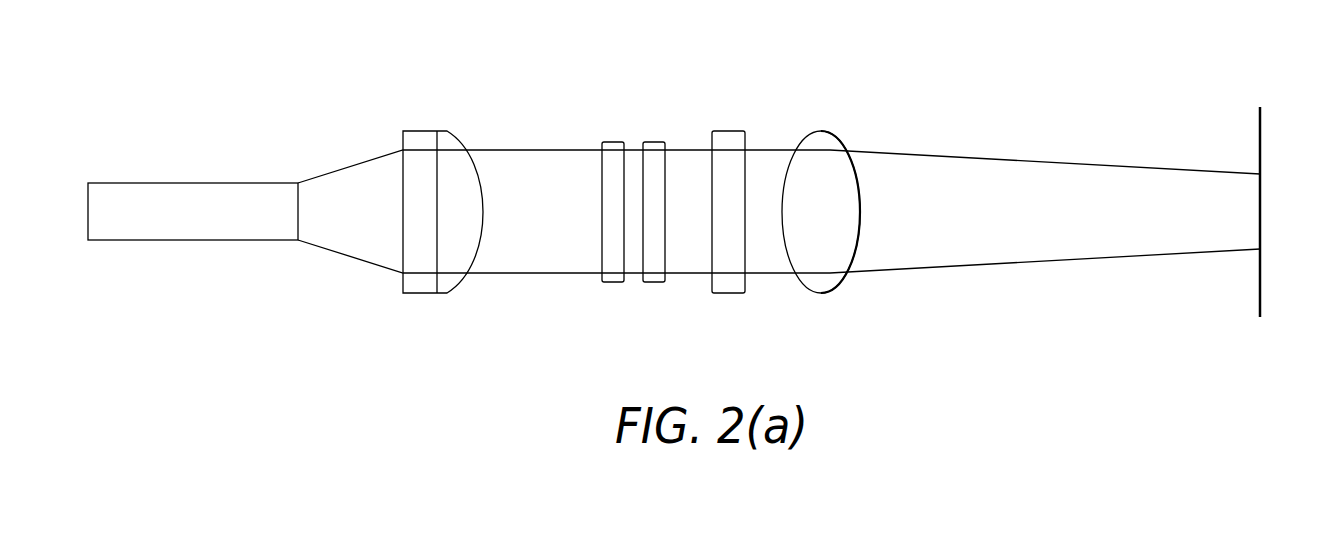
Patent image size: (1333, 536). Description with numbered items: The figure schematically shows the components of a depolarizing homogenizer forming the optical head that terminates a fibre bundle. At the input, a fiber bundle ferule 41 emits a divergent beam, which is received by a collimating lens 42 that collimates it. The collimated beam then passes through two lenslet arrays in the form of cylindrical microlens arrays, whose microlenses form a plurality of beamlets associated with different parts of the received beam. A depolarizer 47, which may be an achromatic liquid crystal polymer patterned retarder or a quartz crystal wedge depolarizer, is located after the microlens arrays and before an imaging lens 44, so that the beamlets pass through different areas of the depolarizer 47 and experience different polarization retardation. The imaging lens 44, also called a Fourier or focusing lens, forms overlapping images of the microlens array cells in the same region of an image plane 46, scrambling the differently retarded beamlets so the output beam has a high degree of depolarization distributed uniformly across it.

The fiber bundle ferule 41 is at (114, 165).
The collimating lens 42 is at (427, 113).
The imaging lens 44 is at (822, 112).
The image plane 46 is at (1260, 91).
The depolarizer 47 is at (727, 311).